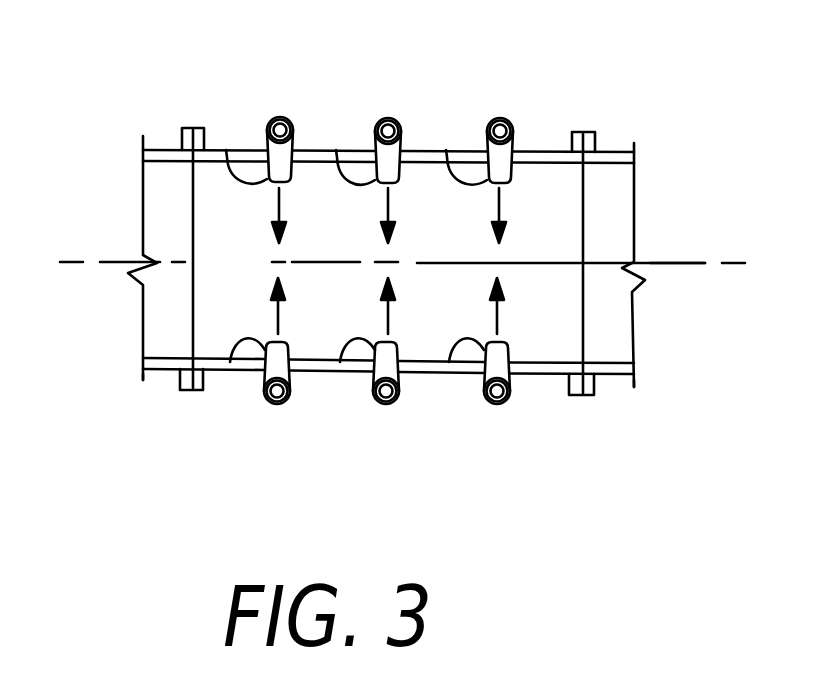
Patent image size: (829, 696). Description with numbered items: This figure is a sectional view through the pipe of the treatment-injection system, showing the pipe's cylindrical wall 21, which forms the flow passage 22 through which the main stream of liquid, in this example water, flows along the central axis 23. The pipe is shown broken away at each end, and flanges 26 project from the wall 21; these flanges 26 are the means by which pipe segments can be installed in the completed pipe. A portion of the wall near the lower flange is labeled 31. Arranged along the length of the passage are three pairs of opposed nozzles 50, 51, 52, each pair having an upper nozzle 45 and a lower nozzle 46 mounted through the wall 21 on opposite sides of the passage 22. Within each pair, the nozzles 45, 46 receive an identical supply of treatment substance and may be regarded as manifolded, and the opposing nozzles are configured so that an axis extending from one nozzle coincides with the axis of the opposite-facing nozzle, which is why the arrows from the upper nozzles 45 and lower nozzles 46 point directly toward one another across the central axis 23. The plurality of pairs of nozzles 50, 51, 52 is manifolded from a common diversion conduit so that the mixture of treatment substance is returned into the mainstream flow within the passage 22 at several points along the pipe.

The cylindrical wall 21 is at (215, 164).
The flow passage 22 is at (260, 280).
The central axis 23 is at (675, 262).
The flanges 26 is at (193, 127).
The wall 31 is at (549, 375).
The nozzle 45 is at (226, 150).
The nozzle 46 is at (230, 362).
The pair of nozzles 50 is at (286, 116).
The pair of nozzles 51 is at (394, 117).
The pair of nozzles 52 is at (505, 117).